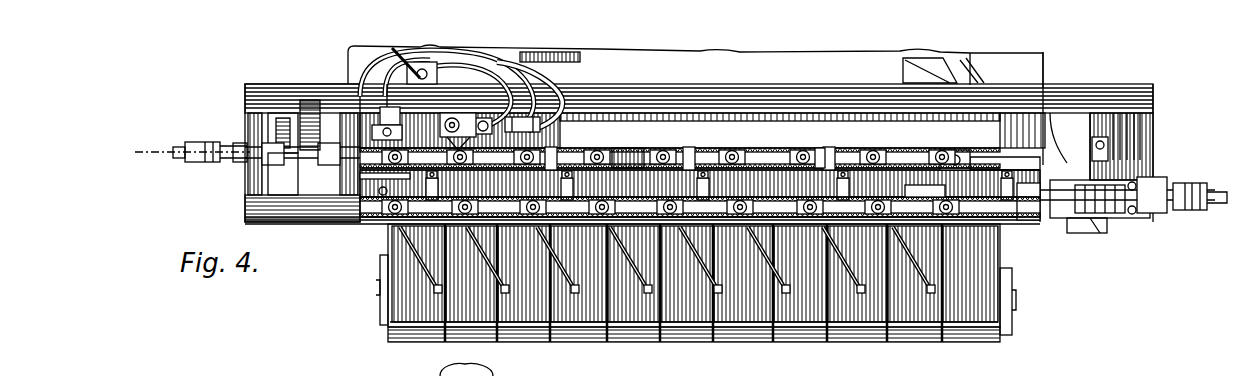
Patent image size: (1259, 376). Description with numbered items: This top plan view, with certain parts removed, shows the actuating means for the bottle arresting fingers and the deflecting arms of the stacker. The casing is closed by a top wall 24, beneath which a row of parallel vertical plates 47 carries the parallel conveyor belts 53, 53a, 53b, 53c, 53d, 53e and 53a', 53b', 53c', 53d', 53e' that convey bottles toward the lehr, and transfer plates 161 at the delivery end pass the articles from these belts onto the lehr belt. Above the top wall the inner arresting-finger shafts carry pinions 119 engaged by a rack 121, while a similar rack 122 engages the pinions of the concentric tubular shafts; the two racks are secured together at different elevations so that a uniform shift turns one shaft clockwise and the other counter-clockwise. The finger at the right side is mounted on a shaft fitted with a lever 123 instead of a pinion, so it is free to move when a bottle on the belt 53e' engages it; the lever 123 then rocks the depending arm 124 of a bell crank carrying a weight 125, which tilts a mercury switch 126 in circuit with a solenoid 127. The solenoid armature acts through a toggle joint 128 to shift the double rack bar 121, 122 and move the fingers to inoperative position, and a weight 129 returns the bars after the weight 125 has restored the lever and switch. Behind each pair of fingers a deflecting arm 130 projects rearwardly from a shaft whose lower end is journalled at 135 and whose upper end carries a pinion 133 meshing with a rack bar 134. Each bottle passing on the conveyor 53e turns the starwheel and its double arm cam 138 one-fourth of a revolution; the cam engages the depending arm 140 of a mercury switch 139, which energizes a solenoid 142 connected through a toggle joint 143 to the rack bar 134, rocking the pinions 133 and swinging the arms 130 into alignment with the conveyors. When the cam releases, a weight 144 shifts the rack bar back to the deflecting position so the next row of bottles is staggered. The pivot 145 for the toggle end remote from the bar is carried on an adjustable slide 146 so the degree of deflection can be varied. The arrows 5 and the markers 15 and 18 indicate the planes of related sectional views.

The section line 5- 5 is at (154, 146).
The frame member 15 is at (803, 146).
The support 18 is at (805, 322).
The top wall 24 is at (813, 66).
The parallel vertical plates 47 is at (553, 270).
The conveyor belt 53 is at (690, 338).
The conveyor belt 53a is at (743, 297).
The conveyor belt 53b is at (798, 299).
The conveyor belt 53c is at (857, 301).
The conveyor belt 53d is at (916, 299).
The conveyor belt 53e is at (970, 299).
The conveyor belt 53a' is at (634, 297).
The conveyor belt 53b' is at (582, 298).
The conveyor belt 53c' is at (540, 295).
The conveyor belt 53d' is at (472, 293).
The conveyor belt 53e' is at (399, 281).
The pinion 119 is at (548, 152).
The rack 121 is at (628, 148).
The rack 122 is at (662, 146).
The lever 123 is at (490, 110).
The depending arm of bell crank lever 124 is at (442, 118).
The weight 125 is at (560, 97).
The mercury switch 126 is at (527, 127).
The solenoid 127 is at (305, 140).
The toggle joint 128 is at (288, 175).
The weight 129 is at (198, 143).
The deflecting arm 130 is at (437, 278).
The pinion 133 is at (383, 195).
The rack bar 134 is at (377, 197).
The journal 135 is at (600, 210).
The double arm cam 138 is at (370, 132).
The mercury switch 139 is at (344, 84).
The depending arm 140 is at (365, 118).
The solenoid 142 is at (1098, 203).
The toggle joint 143 is at (1082, 214).
The weight 144 is at (1181, 210).
The pivot 145 is at (1128, 215).
The adjustable slide 146 is at (1160, 178).
The transfer plate 161 is at (985, 345).